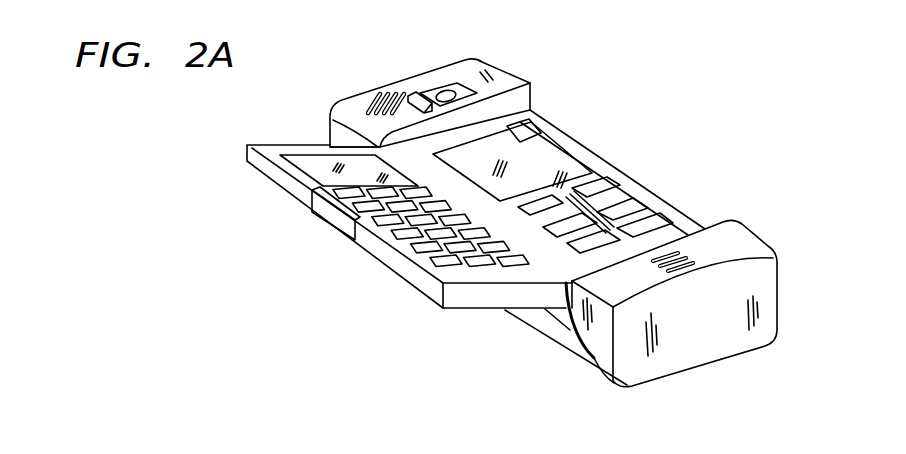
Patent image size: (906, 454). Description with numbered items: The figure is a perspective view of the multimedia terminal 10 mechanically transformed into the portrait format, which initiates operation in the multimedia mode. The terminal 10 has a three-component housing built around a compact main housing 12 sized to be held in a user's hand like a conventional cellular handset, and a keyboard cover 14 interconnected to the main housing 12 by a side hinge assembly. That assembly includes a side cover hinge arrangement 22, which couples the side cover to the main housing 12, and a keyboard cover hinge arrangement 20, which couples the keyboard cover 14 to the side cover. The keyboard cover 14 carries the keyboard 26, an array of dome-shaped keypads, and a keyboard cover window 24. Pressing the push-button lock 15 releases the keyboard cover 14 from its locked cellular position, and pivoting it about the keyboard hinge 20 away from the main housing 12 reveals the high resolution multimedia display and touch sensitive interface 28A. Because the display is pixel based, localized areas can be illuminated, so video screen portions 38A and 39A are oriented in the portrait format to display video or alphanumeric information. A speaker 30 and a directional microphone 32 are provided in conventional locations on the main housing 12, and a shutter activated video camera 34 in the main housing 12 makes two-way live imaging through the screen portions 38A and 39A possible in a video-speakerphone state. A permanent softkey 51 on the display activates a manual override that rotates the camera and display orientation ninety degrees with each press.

The multimedia terminal 10 is at (688, 72).
The main housing 12 is at (704, 350).
The keyboard cover 14 is at (428, 290).
The locking arrangement 15 is at (327, 220).
The keyboard cover hinge arrangement 20 is at (393, 150).
The side cover hinge arrangement 22 is at (563, 320).
The keyboard cover window 24 is at (317, 167).
The keyboard 26 is at (392, 238).
The touch sensitive multimedia interface 28A is at (625, 192).
The speaker 30 is at (368, 96).
The directional microphone 32 is at (700, 256).
The video camera 34 is at (460, 90).
The video screen portion 38A is at (560, 145).
The video screen portion 39A is at (537, 122).
The permanent softkey 51 is at (660, 218).